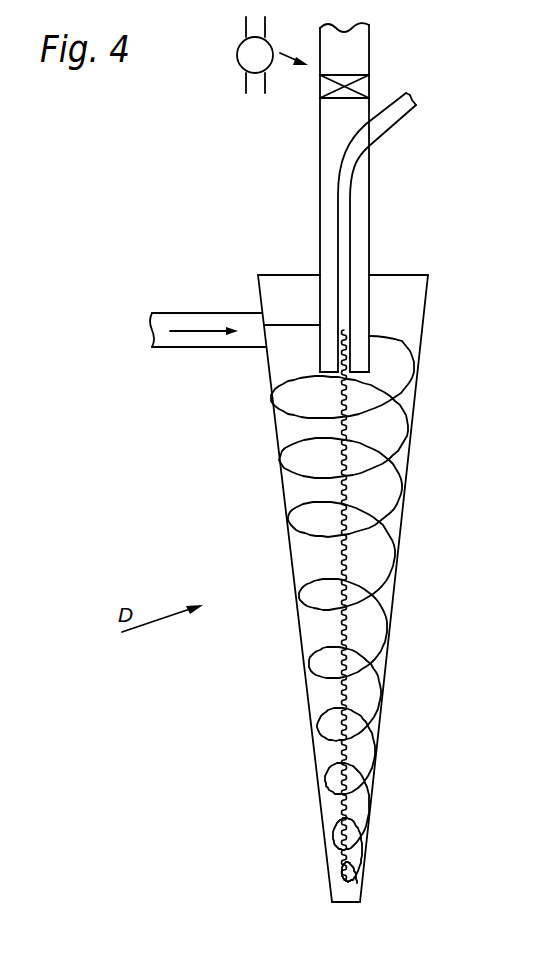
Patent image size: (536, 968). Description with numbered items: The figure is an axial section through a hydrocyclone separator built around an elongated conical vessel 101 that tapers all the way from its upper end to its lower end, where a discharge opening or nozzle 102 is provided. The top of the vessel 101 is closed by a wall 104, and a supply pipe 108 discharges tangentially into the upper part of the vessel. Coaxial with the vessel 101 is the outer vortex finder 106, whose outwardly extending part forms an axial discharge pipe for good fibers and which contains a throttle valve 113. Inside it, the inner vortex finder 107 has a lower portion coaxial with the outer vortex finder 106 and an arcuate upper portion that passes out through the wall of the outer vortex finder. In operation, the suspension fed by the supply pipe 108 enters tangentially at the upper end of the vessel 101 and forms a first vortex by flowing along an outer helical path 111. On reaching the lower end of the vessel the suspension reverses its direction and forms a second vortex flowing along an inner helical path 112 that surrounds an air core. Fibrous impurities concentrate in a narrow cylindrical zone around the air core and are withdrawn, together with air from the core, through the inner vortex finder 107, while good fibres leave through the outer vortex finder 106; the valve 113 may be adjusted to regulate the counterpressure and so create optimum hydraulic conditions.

The conical vessel 101 is at (400, 517).
The discharge opening or nozzle 102 is at (340, 902).
The wall 104 is at (400, 274).
The outer vortex finder 106 is at (370, 328).
The inner vortex finder 107 is at (403, 125).
The supply pipe 108 is at (230, 349).
The outer helical path 111 is at (395, 584).
The inner helical path 112 is at (350, 652).
The throttle valve 113 is at (271, 45).